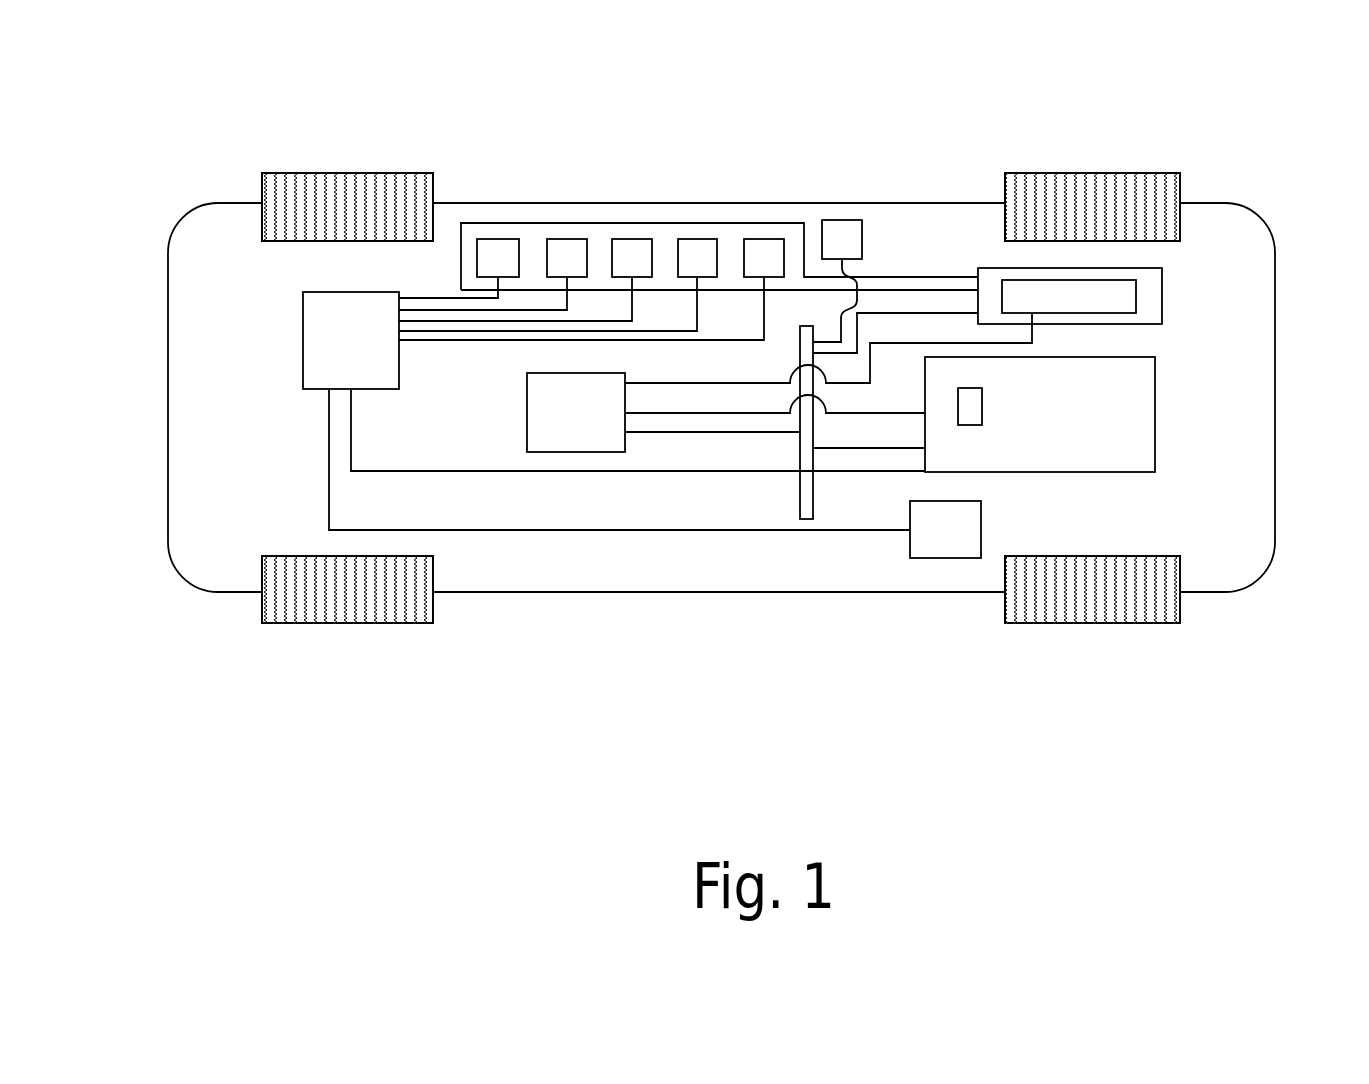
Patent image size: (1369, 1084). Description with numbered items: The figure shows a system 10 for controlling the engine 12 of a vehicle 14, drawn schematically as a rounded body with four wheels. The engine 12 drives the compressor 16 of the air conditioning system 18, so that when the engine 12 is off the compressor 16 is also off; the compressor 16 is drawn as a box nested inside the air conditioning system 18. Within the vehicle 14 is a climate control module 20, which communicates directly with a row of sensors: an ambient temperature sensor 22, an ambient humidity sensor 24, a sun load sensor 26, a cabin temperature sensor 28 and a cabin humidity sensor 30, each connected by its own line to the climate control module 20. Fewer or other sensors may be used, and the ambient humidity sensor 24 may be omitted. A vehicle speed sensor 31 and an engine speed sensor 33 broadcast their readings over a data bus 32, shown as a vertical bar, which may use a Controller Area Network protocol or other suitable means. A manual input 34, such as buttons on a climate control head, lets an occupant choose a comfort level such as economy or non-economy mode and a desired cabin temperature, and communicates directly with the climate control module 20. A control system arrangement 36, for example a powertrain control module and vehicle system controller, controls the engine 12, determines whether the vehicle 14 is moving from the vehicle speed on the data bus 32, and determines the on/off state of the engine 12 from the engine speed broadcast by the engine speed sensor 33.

The system 10 is at (697, 360).
The engine 12 is at (1137, 414).
The vehicle 14 is at (1277, 243).
The compressor 16 is at (1136, 298).
The air conditioning system 18 is at (1166, 283).
The climate control module 20 is at (303, 340).
The ambient temperature sensor 22 is at (496, 240).
The ambient humidity sensor 24 is at (567, 240).
The sun load sensor 26 is at (632, 240).
The cabin temperature sensor 28 is at (697, 240).
The cabin humidity sensor 30 is at (764, 240).
The vehicle speed sensor 31 is at (843, 218).
The data bus 32 is at (797, 502).
The engine speed sensor 33 is at (982, 403).
The manual input 34 is at (938, 558).
The control system arrangement 36 is at (547, 453).